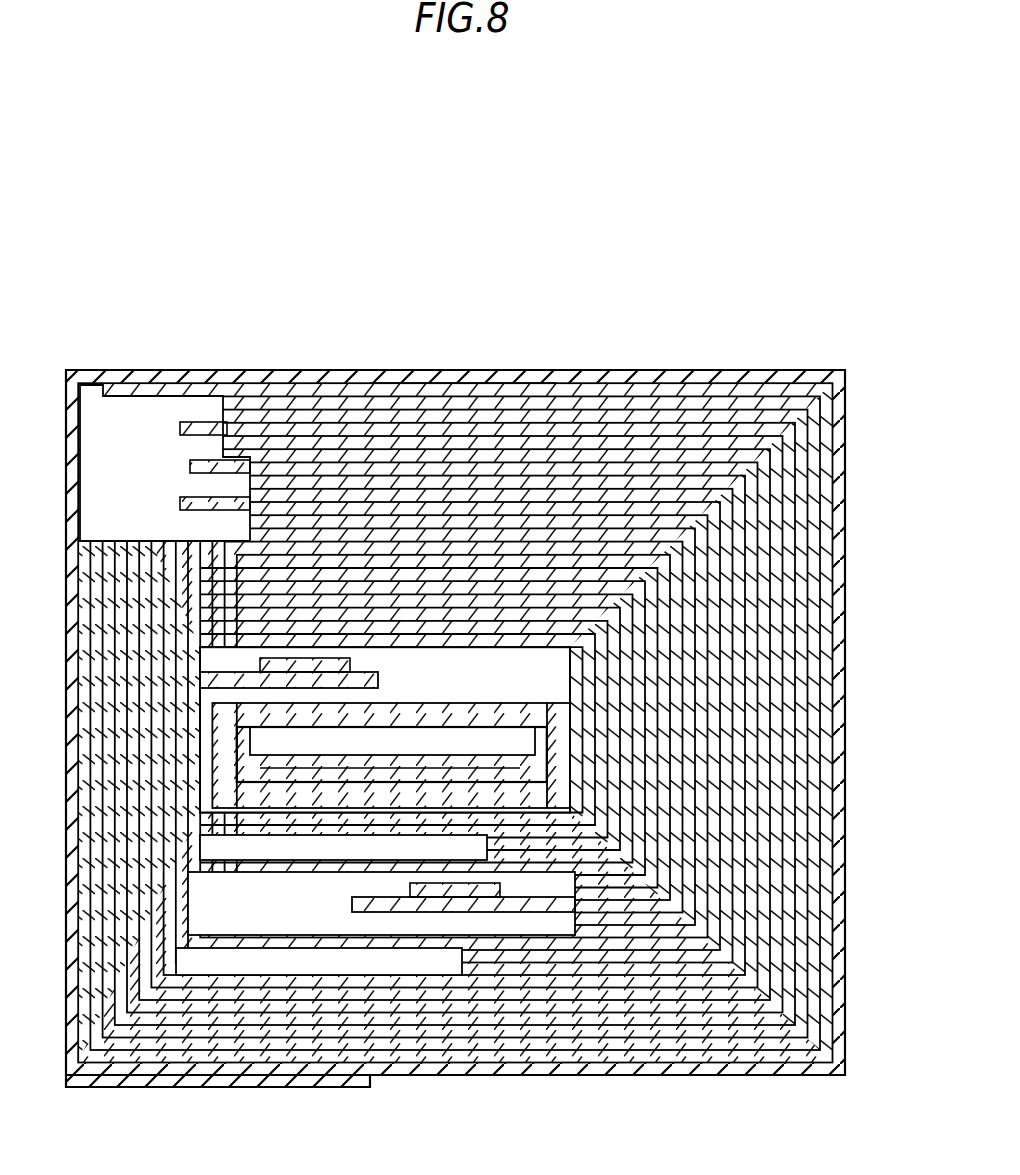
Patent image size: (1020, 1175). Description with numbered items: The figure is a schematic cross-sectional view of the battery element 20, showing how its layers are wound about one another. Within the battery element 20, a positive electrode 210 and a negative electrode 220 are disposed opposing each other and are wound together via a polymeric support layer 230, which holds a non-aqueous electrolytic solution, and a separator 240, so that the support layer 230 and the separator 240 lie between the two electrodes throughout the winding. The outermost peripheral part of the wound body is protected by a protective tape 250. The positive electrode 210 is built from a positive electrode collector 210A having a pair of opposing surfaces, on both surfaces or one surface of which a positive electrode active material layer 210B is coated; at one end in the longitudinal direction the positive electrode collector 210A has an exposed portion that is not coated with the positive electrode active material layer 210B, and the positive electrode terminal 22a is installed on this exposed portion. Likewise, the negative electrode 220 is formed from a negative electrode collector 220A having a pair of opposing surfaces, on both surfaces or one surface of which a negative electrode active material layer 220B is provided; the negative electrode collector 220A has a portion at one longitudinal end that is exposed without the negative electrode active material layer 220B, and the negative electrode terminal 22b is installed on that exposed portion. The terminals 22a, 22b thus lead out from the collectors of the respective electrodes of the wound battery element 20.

The battery element 20 is at (455, 560).
The positive electrode 210 is at (190, 365).
The positive electrode collector 210A is at (213, 462).
The positive electrode active material layer 210B is at (287, 477).
The negative electrode 220 is at (370, 238).
The negative electrode collector 220A is at (397, 395).
The negative electrode active material layer 220B is at (523, 530).
The polymeric support layer 230 is at (622, 513).
The separator 240 is at (733, 427).
The protective tape 250 is at (800, 375).
The positive electrode terminal 22a is at (278, 668).
The negative electrode terminal 22b is at (449, 888).